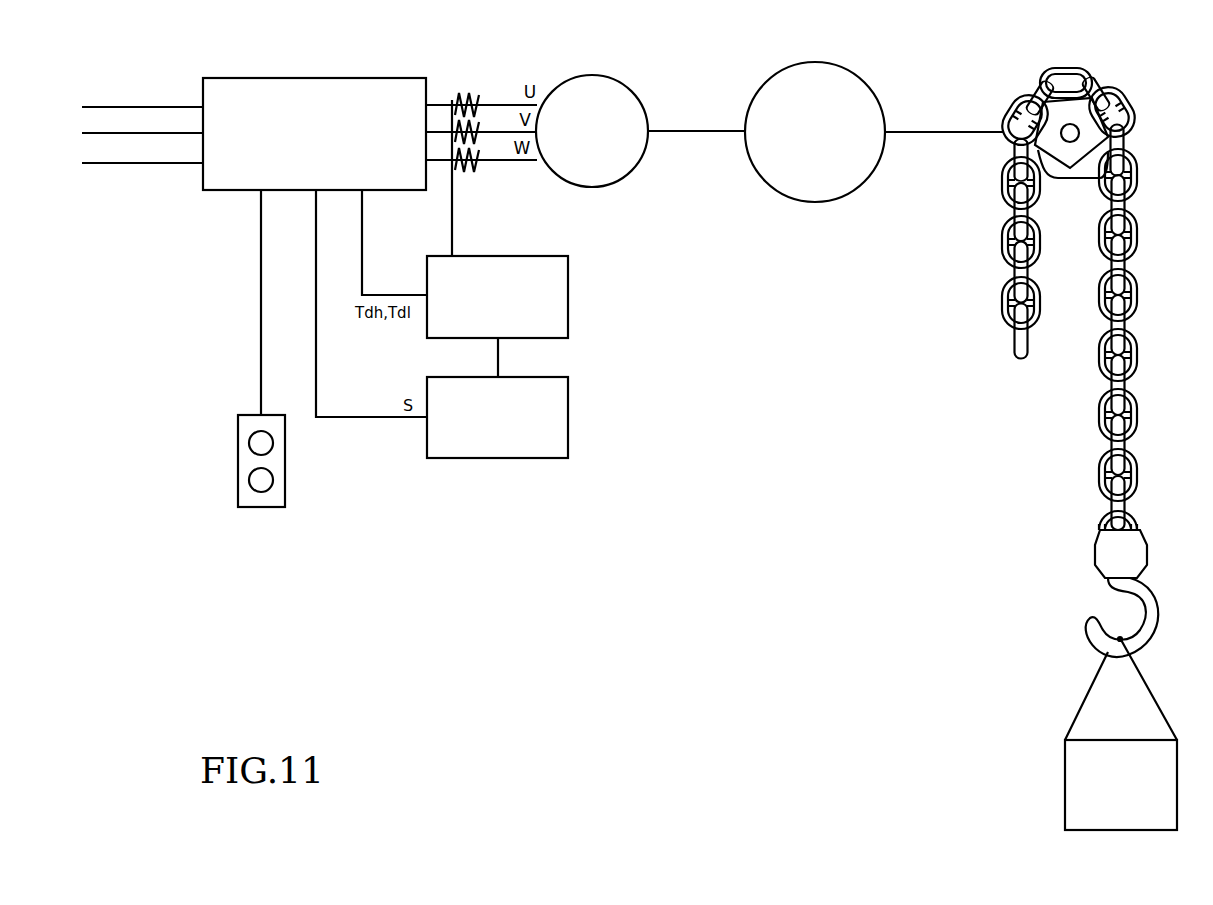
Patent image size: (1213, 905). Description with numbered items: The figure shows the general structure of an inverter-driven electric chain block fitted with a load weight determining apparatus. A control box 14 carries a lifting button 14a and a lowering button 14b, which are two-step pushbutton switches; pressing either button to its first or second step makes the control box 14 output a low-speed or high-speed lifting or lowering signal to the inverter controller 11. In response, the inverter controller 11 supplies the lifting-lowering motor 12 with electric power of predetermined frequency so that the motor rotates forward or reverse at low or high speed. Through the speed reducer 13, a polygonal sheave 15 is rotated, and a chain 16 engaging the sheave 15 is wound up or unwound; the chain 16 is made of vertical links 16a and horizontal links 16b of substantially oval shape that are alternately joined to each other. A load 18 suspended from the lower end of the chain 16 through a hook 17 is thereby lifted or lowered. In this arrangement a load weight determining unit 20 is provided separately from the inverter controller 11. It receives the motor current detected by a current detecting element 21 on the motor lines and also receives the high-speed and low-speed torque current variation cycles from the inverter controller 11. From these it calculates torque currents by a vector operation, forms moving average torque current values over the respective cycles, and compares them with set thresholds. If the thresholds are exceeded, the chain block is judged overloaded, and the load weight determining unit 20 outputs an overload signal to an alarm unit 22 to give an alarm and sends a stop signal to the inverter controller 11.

The inverter controller 11 is at (334, 78).
The lifting-lowering motor 12 is at (588, 75).
The speed reducer 13 is at (808, 62).
The control box 14 is at (269, 348).
The lifting button 14a is at (249, 441).
The lowering button 14b is at (249, 483).
The sheave 15 is at (1083, 100).
The chain 16 is at (1010, 299).
The vertical link 16a is at (1003, 235).
The horizontal link 16b is at (1010, 277).
The hook 17 is at (1147, 609).
The load 18 is at (1077, 768).
The load weight determining unit 20 is at (570, 295).
The current detecting element 21 is at (465, 172).
The alarm unit 22 is at (570, 417).